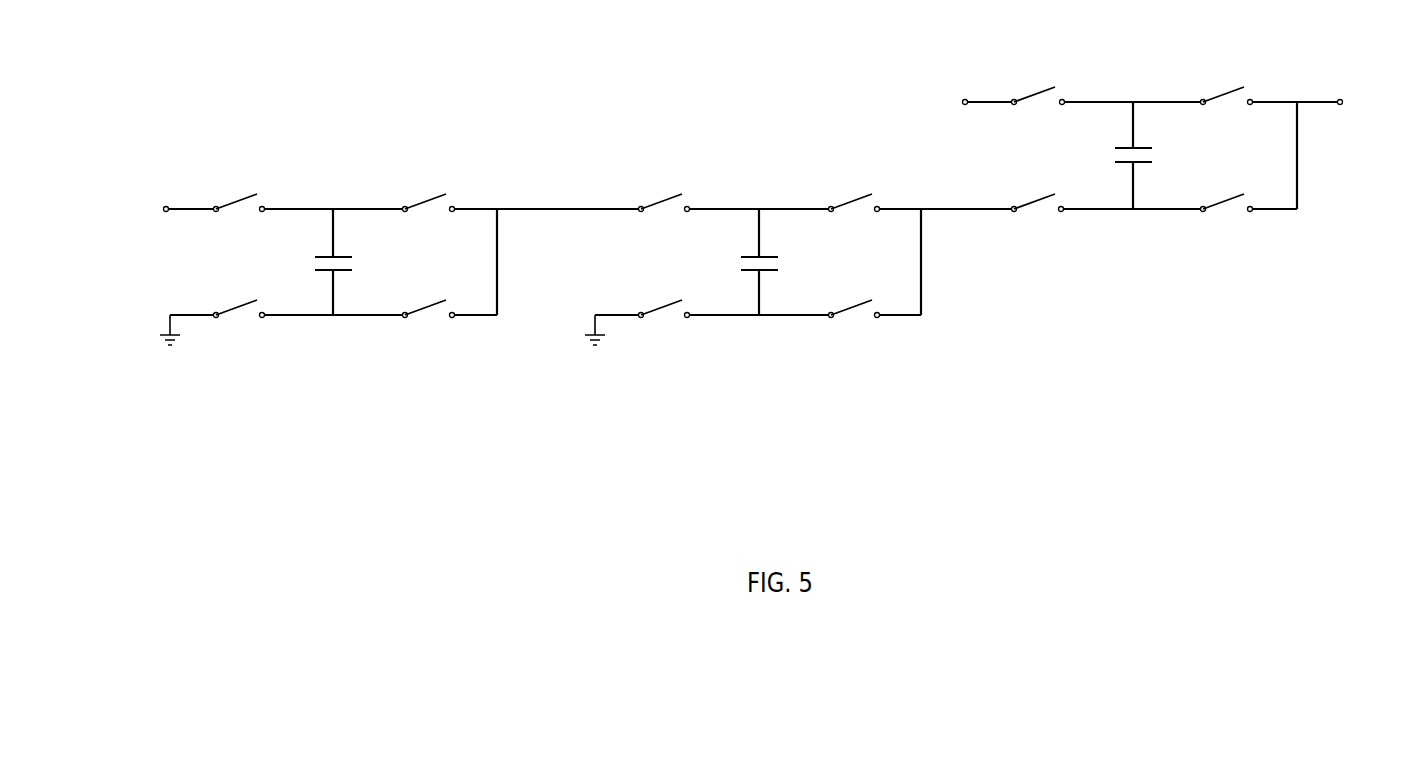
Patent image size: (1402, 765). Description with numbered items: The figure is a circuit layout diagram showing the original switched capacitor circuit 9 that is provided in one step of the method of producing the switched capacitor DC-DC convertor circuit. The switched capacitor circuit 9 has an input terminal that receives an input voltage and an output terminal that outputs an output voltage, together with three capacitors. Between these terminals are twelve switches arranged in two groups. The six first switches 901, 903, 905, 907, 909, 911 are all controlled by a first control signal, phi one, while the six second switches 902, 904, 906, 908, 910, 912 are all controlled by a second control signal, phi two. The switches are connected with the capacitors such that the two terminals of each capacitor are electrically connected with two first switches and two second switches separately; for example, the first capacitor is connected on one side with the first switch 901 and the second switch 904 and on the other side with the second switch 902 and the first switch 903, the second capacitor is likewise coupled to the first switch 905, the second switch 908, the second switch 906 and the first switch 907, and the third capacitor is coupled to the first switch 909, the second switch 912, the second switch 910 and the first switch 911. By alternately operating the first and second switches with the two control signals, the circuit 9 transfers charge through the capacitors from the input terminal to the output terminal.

The original switched capacitor circuit 9 is at (447, 102).
The first switch 901 is at (239, 208).
The second switch 902 is at (239, 314).
The first switch 903 is at (429, 314).
The second switch 904 is at (429, 208).
The first switch 905 is at (664, 208).
The second switch 906 is at (664, 314).
The first switch 907 is at (854, 314).
The second switch 908 is at (854, 208).
The first switch 909 is at (1036, 101).
The second switch 910 is at (1038, 208).
The first switch 911 is at (1227, 208).
The second switch 912 is at (1227, 101).